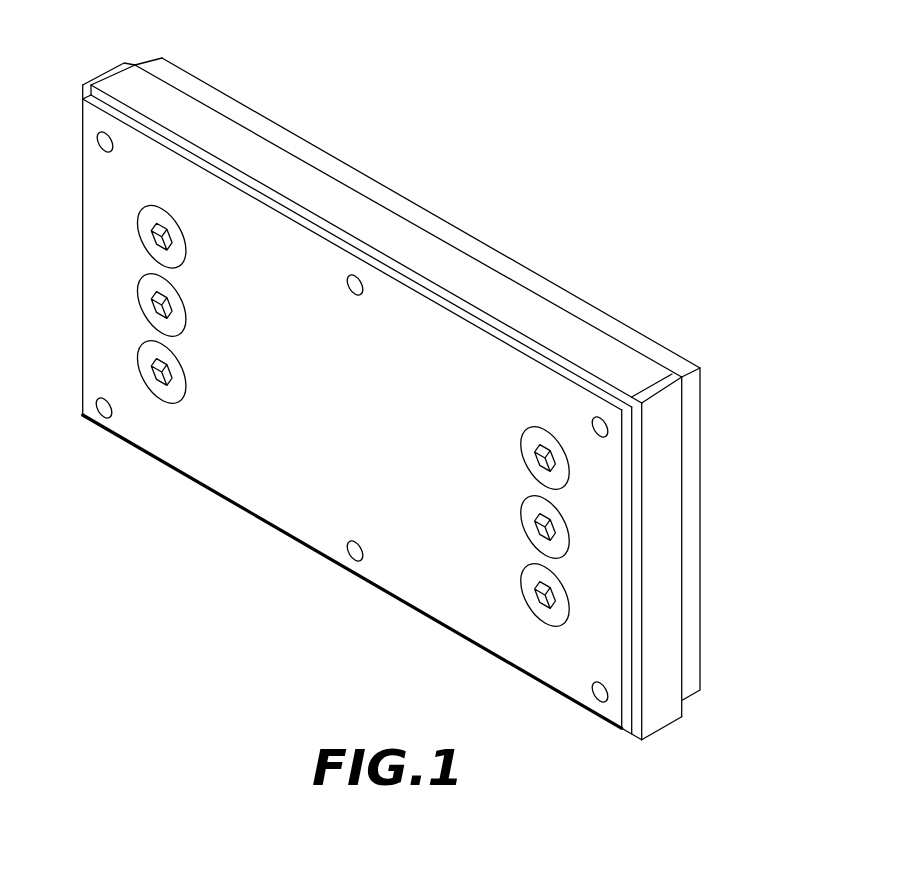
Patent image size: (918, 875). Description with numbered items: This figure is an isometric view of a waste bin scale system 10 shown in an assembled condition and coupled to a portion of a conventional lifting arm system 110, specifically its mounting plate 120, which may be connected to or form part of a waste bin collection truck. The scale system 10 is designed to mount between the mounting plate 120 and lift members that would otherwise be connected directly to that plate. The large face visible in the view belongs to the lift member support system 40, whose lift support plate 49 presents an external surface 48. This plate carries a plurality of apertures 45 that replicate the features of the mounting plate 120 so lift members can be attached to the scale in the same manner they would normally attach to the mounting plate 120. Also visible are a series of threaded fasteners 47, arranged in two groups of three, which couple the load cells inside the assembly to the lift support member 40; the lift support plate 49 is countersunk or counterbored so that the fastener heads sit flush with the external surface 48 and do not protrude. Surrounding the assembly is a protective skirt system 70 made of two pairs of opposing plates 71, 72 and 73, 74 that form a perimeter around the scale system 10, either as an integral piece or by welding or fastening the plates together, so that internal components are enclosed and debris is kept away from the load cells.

The waste bin scale system 10 is at (571, 132).
The lift member support system 40 is at (315, 406).
The threaded apertures 45 is at (97, 148).
The fasteners 47 is at (140, 370).
The external surface 48 is at (443, 534).
The lift support plate 49 is at (240, 463).
The protective skirt system 70 is at (648, 382).
The skirt plate 71 is at (670, 572).
The skirt plate 72 is at (87, 84).
The skirt plate 73 is at (342, 200).
The skirt plate 74 is at (627, 731).
The lifting arm system 110 is at (571, 282).
The mounting plate 120 is at (697, 510).